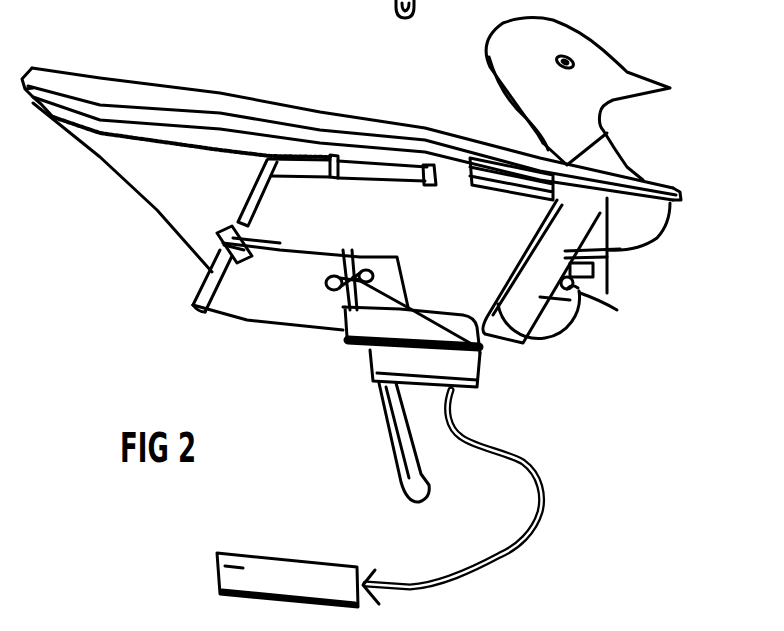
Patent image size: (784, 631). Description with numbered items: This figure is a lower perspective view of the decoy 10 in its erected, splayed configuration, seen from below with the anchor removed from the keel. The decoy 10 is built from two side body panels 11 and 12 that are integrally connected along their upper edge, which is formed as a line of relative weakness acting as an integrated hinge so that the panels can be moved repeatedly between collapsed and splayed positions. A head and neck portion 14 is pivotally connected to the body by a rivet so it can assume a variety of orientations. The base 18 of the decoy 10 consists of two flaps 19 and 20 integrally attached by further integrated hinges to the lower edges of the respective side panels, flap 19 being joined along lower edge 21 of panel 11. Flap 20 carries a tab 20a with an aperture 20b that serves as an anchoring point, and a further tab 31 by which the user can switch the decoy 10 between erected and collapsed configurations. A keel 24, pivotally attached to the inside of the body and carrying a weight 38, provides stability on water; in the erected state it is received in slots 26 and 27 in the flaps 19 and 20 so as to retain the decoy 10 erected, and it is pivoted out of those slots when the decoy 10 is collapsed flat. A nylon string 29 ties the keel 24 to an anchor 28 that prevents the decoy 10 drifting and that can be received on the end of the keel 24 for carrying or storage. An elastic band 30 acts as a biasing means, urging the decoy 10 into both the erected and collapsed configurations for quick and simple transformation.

The decoy 10 is at (627, 357).
The side body panel 11 is at (123, 94).
The side body panel 12 is at (143, 173).
The head and neck portion 14 is at (607, 155).
The base 18 is at (262, 287).
The flap 19 is at (207, 272).
The flap 20 is at (197, 305).
The tab 20a is at (617, 310).
The aperture 20b is at (593, 273).
The lower edge 21 is at (437, 147).
The keel 24 is at (430, 492).
The slot 26 is at (222, 222).
The slot 27 is at (207, 253).
The anchor 28 is at (217, 570).
The nylon string 29 is at (540, 508).
The elastic band 30 is at (537, 323).
The tab 31 is at (459, 188).
The weight 38 is at (343, 322).